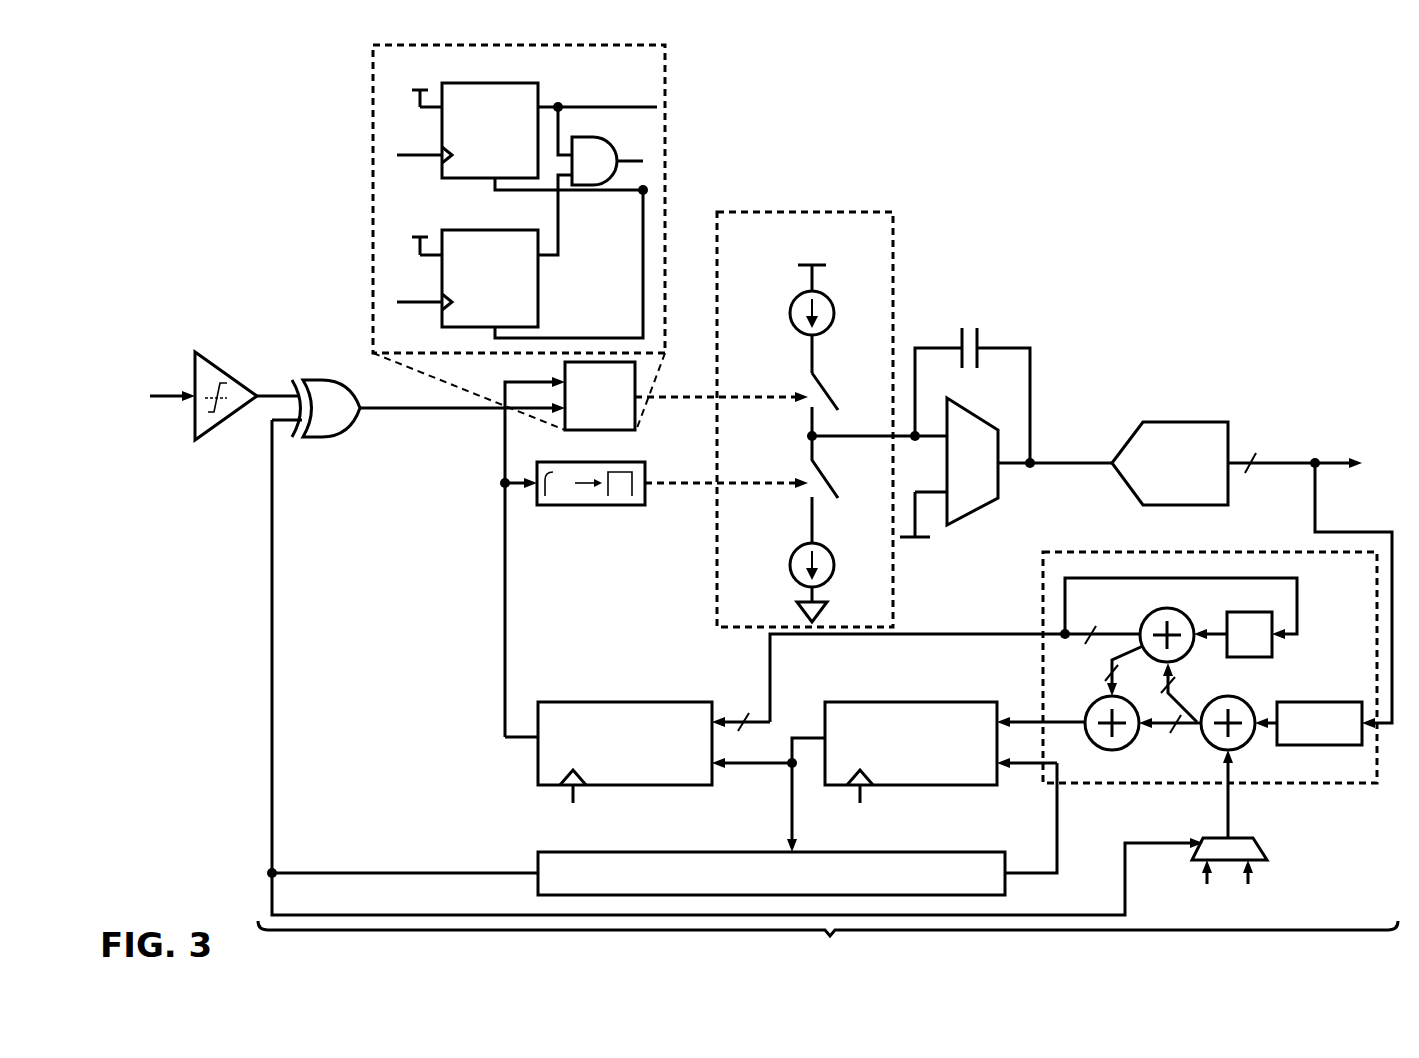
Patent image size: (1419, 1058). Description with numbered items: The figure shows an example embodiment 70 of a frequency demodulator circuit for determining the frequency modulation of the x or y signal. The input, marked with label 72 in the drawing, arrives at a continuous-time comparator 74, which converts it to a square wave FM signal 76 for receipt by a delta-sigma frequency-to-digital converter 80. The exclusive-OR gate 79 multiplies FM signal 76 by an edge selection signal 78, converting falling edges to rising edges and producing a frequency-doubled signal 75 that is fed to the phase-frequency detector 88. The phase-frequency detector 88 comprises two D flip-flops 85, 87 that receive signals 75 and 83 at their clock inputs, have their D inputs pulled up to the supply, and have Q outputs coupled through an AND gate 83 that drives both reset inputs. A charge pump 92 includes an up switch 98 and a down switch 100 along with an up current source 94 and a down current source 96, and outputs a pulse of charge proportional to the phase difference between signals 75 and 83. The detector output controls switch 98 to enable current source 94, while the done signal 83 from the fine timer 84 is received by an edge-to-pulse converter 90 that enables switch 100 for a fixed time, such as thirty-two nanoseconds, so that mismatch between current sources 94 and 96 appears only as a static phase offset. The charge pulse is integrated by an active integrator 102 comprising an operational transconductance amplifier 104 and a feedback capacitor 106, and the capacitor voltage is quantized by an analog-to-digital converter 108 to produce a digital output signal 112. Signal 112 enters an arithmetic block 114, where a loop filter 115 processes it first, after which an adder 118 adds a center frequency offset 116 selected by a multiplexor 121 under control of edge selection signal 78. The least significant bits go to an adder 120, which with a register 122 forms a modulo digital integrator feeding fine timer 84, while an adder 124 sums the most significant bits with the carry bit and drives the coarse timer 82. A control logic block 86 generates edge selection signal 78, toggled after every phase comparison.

The frequency demodulator circuit 70 is at (178, 103).
The FM input signal 72 is at (170, 402).
The continuous-time comparator 74 is at (216, 428).
The square wave FM signal 76 is at (272, 388).
The edge selection signal 78 is at (270, 548).
The exclusive-OR gate 79 is at (347, 430).
The frequency-doubled signal 75 is at (490, 412).
The done signal 83 is at (504, 606).
The D flip-flop 85 is at (473, 82).
The D flip-flop 87 is at (460, 230).
The phase-frequency detector 88 is at (372, 218).
The edge-to-pulse converter 90 is at (620, 506).
The charge pump 92 is at (832, 398).
The up current source 94 is at (795, 300).
The down current source 96 is at (800, 545).
The up switch 98 is at (822, 386).
The down switch 100 is at (824, 468).
The active integrator 102 is at (1027, 437).
The operational transconductance amplifier 104 is at (977, 510).
The feedback capacitor 106 is at (978, 330).
The analog-to-digital converter 108 is at (1168, 422).
The digital output signal 112 is at (1285, 460).
The arithmetic block 114 is at (1073, 689).
The loop filter 115 is at (1293, 702).
The center frequency offset 116 is at (1226, 820).
The adder 118 is at (1237, 752).
The adder 120 is at (1192, 653).
The multiplexor 121 is at (1258, 850).
The register 122 is at (1273, 647).
The adder 124 is at (1108, 752).
The coarse timer 82 is at (977, 786).
The fine timer 84 is at (665, 787).
The control logic block 86 is at (968, 851).
The delta-sigma frequency-to-digital converter 80 is at (828, 945).